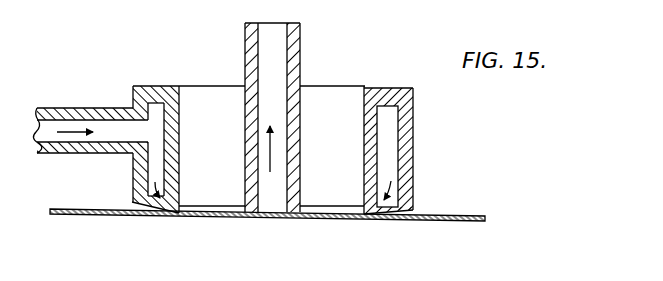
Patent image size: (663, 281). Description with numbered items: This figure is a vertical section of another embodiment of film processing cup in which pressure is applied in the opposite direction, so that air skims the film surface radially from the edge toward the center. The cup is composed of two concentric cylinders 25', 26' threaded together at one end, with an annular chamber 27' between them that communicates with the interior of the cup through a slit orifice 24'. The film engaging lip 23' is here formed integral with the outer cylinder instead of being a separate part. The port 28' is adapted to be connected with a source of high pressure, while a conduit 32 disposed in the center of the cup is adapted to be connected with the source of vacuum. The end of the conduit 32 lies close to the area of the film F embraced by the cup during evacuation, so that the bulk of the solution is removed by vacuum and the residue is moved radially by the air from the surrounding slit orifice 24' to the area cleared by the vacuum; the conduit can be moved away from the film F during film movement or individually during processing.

The conduit 32 is at (245, 60).
The inner concentric cylinder 26' is at (393, 80).
The outer concentric cylinder 25' is at (409, 149).
The annular chamber 27' is at (416, 156).
The port 28' is at (90, 150).
The film engaging lip 23' is at (166, 225).
The slit orifice 24' is at (384, 236).
The foil F is at (471, 219).